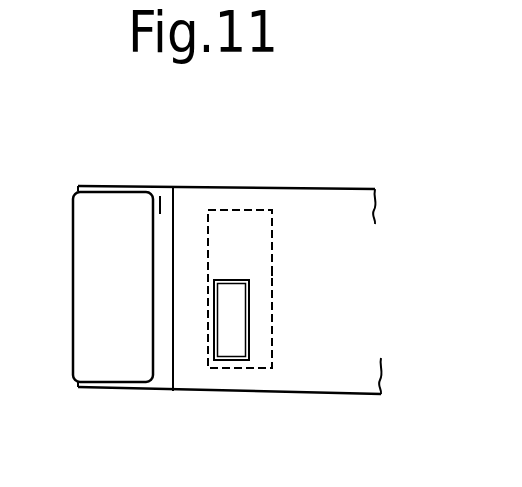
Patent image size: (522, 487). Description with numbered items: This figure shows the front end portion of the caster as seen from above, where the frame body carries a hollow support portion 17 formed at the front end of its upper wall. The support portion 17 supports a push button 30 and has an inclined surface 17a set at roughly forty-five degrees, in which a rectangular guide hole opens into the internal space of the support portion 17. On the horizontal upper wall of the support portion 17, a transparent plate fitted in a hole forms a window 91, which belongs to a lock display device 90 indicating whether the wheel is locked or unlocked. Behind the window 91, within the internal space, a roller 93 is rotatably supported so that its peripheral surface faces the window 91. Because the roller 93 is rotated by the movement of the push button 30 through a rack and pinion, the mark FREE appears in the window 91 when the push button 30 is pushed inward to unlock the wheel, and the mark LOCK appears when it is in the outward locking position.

The support portion 17 is at (309, 186).
The inclined surface 17a is at (160, 196).
The push button 30 is at (72, 346).
The lock display device 90 is at (238, 204).
The window 91 is at (249, 341).
The roller 93 is at (273, 274).